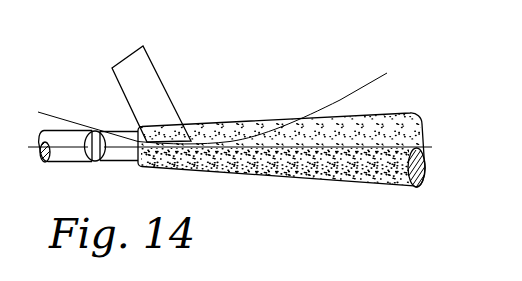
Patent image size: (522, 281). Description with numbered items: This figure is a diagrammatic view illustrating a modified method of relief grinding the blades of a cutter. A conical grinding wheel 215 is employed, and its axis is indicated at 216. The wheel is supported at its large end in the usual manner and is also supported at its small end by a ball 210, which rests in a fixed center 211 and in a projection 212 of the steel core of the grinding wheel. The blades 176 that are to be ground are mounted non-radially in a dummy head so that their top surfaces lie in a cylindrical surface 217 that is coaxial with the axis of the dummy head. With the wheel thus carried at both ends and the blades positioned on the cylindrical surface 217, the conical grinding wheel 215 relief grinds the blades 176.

The blade 176 is at (157, 90).
The ball 210 is at (97, 161).
The fixed center 211 is at (65, 156).
The projection of the steel core 212 is at (125, 156).
The conical grinding wheel 215 is at (332, 168).
The axis of the grinding wheel 216 is at (426, 147).
The cylindrical surface 217 is at (322, 112).